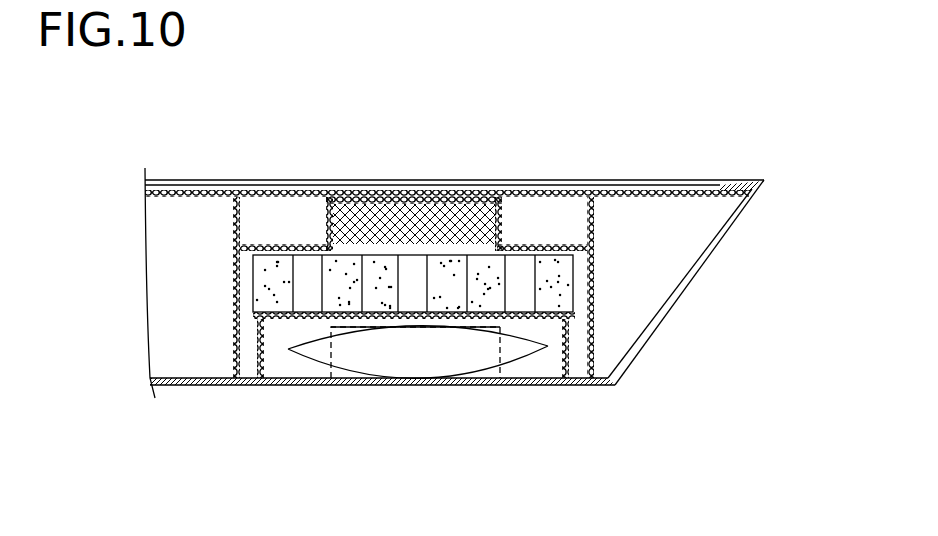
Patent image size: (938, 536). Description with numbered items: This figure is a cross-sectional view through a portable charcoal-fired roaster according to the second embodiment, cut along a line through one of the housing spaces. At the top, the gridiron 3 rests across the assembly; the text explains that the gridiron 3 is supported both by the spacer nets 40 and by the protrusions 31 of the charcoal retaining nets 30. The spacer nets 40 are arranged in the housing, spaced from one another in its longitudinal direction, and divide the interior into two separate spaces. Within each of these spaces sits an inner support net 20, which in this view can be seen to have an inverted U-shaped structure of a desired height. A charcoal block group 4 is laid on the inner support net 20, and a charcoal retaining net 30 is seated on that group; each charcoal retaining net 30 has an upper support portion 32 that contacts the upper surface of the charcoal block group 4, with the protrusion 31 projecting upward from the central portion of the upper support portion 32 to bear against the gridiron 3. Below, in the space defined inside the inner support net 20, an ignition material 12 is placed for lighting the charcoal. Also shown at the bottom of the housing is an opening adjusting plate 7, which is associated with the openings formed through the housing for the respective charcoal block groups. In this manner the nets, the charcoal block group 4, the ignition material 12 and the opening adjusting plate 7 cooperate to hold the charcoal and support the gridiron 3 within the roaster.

The gridiron 3 is at (530, 187).
The spacer net 40 is at (236, 228).
The upper support portion 32 is at (278, 247).
The charcoal retaining net 30 is at (536, 235).
The protrusion 31 is at (403, 195).
The heat storage block 4 is at (273, 285).
The inner support net 20 is at (537, 318).
The ignition material 12 is at (320, 365).
The opening adjusting plate 7 is at (500, 345).